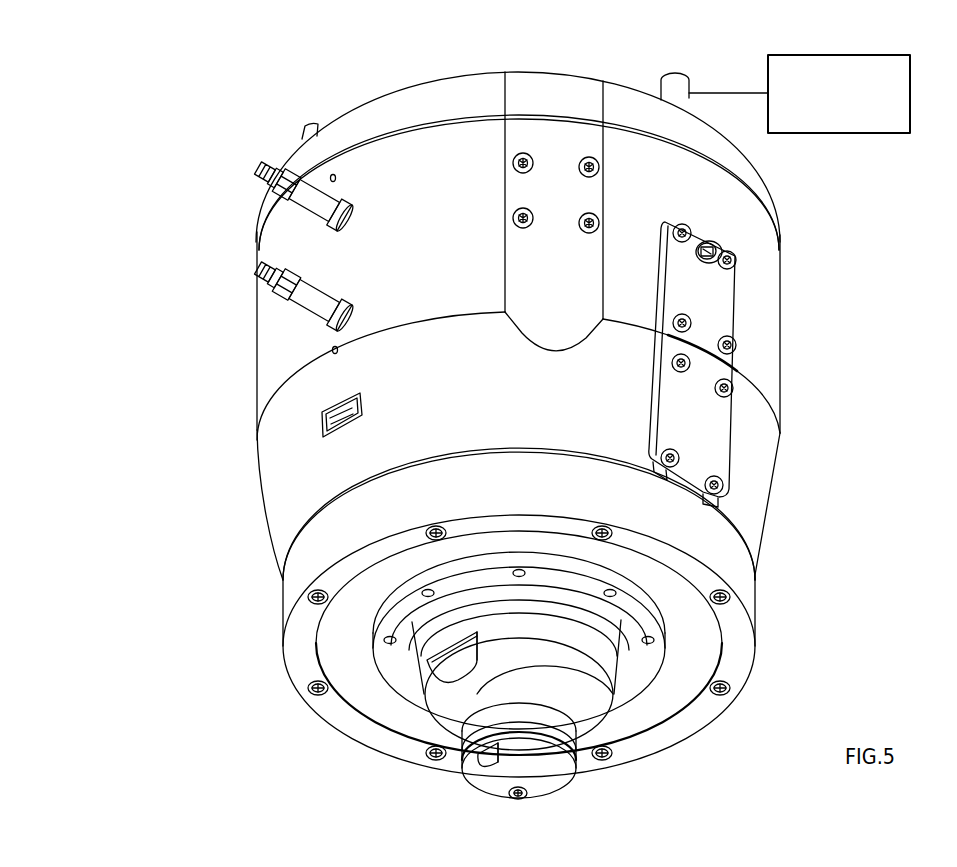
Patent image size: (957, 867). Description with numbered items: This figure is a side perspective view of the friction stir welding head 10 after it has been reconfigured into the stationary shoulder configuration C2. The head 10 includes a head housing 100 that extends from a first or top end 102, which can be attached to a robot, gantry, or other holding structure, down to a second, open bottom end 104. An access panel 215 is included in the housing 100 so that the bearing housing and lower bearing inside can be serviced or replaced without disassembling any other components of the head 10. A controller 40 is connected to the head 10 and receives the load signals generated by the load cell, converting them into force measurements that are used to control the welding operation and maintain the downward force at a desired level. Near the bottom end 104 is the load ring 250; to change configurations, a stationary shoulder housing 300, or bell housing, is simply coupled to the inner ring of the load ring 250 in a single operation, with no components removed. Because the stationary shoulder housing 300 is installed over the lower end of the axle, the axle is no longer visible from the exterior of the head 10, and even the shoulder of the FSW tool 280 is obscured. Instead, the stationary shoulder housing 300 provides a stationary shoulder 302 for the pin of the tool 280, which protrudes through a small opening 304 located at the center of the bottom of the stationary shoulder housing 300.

The head 10 is at (513, 464).
The controller 40 is at (910, 110).
The head housing 100 is at (300, 473).
The top end 102 is at (778, 207).
The bottom end 104 is at (518, 603).
The access panel 215 is at (739, 338).
The load ring 250 is at (302, 570).
The FSW tool 280 is at (518, 799).
The stationary shoulder housing 300 is at (467, 732).
The stationary shoulder 302 is at (528, 720).
The small opening 304 is at (532, 796).
The stationary shoulder configuration C2 is at (212, 397).